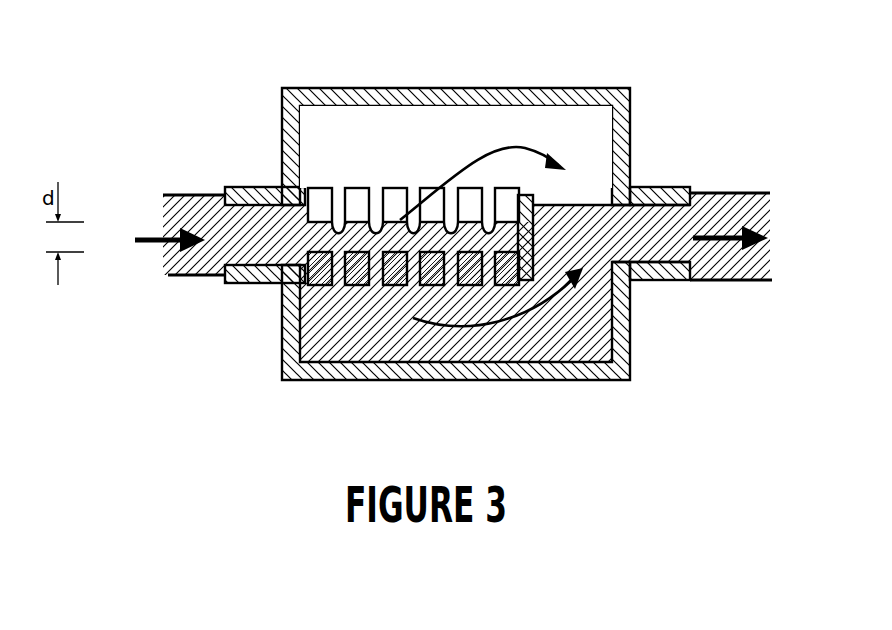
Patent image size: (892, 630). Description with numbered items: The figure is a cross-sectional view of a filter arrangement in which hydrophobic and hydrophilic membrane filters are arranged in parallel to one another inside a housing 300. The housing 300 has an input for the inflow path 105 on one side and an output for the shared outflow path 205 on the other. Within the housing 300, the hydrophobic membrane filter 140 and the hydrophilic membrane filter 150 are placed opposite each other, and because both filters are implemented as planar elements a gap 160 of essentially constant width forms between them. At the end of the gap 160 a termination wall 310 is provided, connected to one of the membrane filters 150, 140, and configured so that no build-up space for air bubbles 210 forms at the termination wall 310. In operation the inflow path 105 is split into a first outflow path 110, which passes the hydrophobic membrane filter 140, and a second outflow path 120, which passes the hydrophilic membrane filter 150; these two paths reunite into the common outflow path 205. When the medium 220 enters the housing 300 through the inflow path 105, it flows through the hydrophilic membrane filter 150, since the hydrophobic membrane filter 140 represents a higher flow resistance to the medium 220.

The inflow path 105 is at (158, 238).
The first outflow path 110 is at (505, 147).
The second outflow path 120 is at (527, 347).
The hydrophobic membrane filter 140 is at (398, 188).
The hydrophilic membrane filter 150 is at (480, 287).
The gap 160 is at (372, 287).
The outflow path 205 is at (737, 282).
The build-up space for air bubbles 210 is at (595, 118).
The medium 220 is at (598, 348).
The housing 300 is at (428, 88).
The termination wall 310 is at (535, 193).